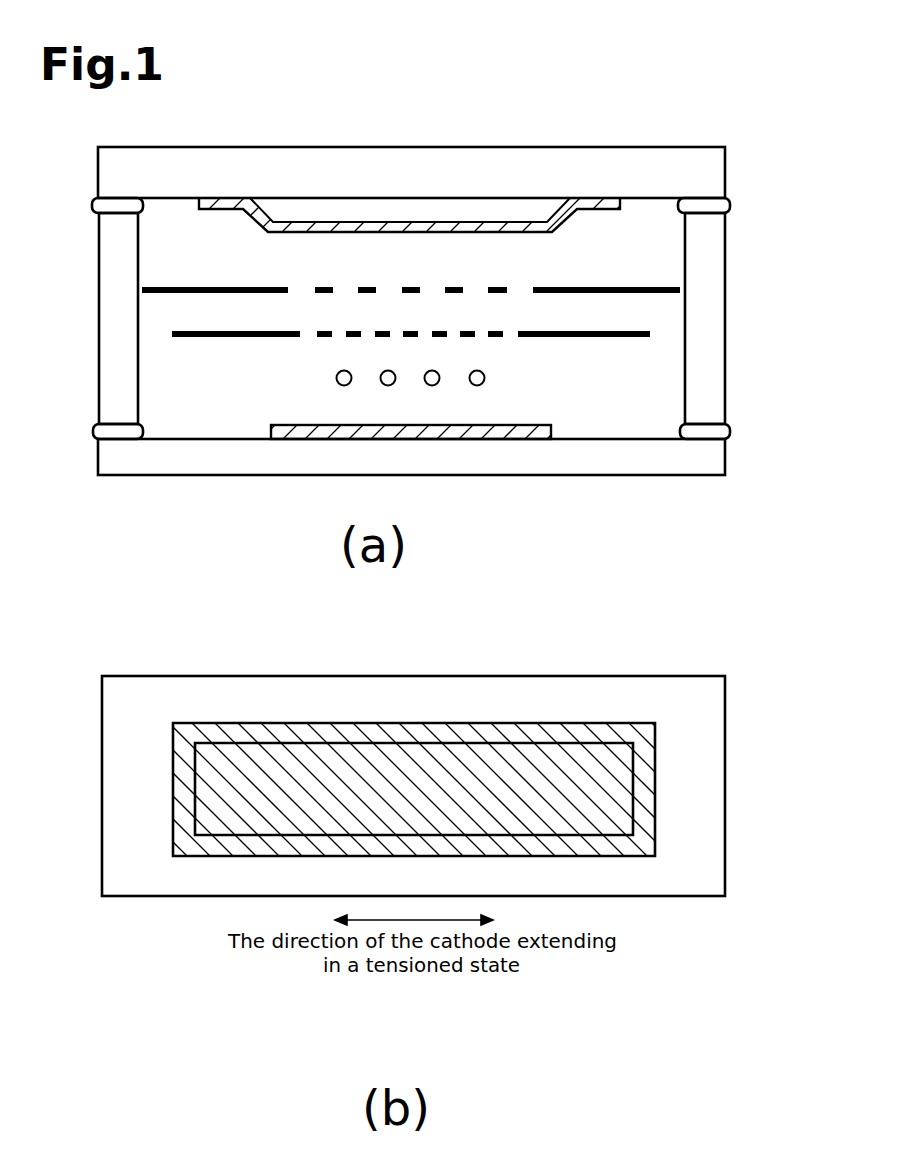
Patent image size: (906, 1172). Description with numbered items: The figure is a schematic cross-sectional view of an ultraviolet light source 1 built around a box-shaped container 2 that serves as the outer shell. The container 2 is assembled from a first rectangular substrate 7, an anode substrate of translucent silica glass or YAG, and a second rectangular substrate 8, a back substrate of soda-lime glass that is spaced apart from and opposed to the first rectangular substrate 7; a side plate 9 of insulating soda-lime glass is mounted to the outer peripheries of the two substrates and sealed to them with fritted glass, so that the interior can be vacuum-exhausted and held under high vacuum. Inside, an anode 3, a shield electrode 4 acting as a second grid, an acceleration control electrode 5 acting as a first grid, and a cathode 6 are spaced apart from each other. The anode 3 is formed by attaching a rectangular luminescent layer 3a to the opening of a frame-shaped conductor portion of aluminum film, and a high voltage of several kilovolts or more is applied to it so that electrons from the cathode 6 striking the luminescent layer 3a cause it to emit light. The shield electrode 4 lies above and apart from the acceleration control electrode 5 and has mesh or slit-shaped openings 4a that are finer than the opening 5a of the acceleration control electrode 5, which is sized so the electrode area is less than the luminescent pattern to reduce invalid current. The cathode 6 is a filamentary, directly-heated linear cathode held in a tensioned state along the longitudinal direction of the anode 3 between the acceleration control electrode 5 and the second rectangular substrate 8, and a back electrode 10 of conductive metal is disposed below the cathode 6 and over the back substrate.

The ultraviolet light source 1 is at (740, 141).
The container 2 is at (153, 484).
The anode 3 is at (220, 198).
The luminescent layer 3a is at (333, 208).
The shield electrode 4 is at (411, 265).
The openings 4a is at (474, 286).
The acceleration control electrode 5 is at (411, 341).
The opening 5a is at (510, 333).
The cathode 6 is at (336, 378).
The first rectangular substrate 7 is at (518, 147).
The second rectangular substrate 8 is at (725, 465).
The side plate 9 is at (98, 292).
The back electrode 10 is at (520, 425).